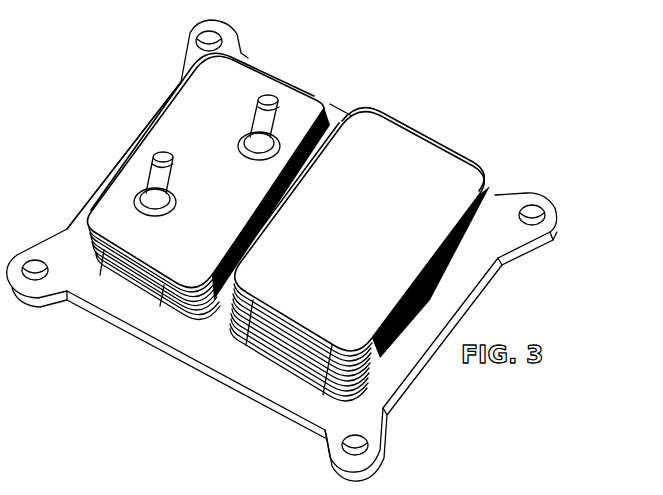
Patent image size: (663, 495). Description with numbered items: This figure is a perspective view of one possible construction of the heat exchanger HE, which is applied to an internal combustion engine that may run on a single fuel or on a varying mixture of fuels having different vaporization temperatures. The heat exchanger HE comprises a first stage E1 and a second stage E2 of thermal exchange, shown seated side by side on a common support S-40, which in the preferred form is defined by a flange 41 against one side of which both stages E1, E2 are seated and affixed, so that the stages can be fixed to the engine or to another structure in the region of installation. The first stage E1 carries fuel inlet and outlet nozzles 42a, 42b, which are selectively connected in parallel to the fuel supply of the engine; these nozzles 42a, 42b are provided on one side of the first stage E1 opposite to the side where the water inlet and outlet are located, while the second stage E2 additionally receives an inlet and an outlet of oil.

The support flange S-40 is at (282, 250).
The flange 41 is at (70, 245).
The fuel inlet nozzle 42a is at (262, 117).
The fuel outlet nozzle 42b is at (170, 179).
The heat exchanger HE is at (327, 215).
The first stage of thermal exchange E1 is at (241, 174).
The second stage of thermal exchange E2 is at (495, 172).